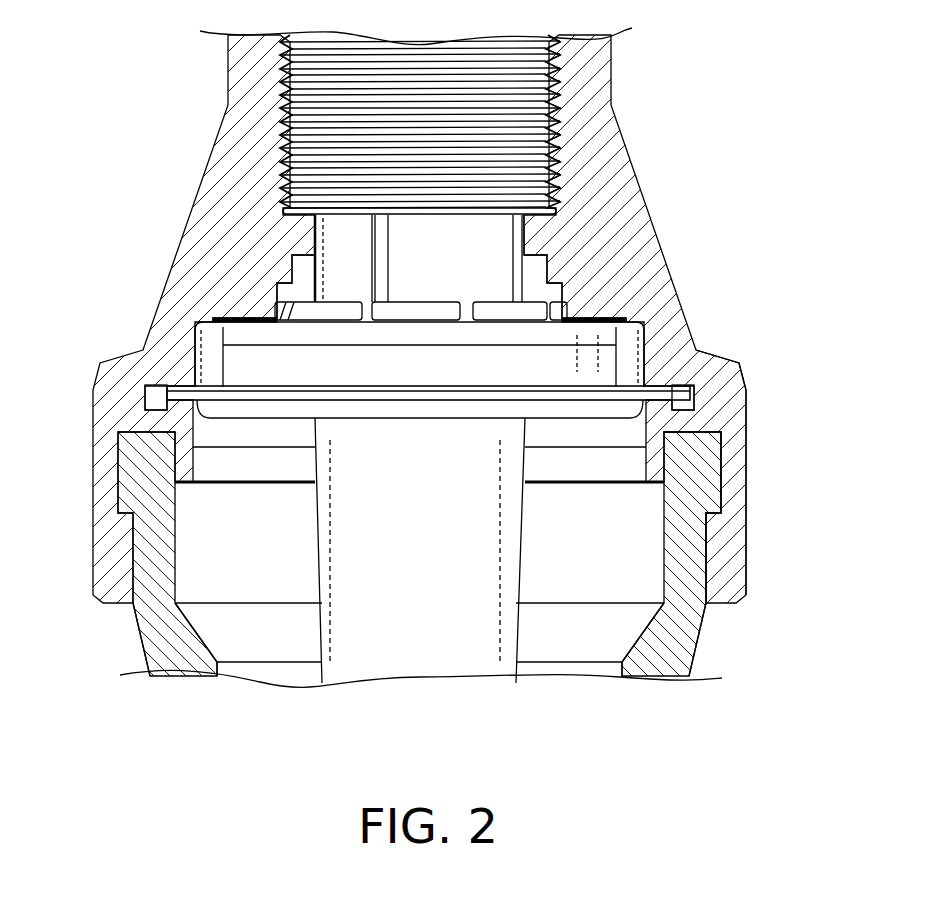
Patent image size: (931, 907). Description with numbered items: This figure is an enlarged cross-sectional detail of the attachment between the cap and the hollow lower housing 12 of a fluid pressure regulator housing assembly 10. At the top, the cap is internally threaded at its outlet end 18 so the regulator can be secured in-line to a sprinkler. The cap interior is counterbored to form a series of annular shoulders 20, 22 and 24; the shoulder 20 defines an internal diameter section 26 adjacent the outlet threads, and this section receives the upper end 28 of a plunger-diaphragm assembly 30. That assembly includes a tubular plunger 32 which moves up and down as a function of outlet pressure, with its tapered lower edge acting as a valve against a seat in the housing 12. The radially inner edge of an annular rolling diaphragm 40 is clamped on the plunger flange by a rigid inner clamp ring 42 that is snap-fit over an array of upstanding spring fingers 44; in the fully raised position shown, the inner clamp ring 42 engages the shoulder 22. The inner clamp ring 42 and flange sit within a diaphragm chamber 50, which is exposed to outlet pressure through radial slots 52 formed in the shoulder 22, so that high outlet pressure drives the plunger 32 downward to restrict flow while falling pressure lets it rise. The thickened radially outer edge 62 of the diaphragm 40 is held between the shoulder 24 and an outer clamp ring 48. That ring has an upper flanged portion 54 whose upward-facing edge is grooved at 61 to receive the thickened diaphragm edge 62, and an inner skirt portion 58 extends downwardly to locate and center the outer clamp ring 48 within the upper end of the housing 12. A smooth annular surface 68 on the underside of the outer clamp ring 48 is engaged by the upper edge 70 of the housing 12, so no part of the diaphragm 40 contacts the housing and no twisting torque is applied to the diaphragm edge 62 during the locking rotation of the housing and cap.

The fluid pressure regulator housing assembly 10 is at (690, 135).
The lower housing 12 is at (700, 650).
The outlet end 18 is at (597, 59).
The annular shoulder 20 is at (565, 218).
The annular shoulder 22 is at (600, 312).
The annular shoulder 24 is at (670, 342).
The internal diameter section 26 is at (532, 238).
The upper end 28 is at (337, 241).
The plunger-diaphragm assembly 30 is at (318, 624).
The tubular plunger 32 is at (502, 557).
The rolling diaphragm 40 is at (233, 372).
The inner clamp ring 42 is at (257, 337).
The spring fingers 44 is at (407, 312).
The outer clamp ring 48 is at (672, 460).
The diaphragm chamber 50 is at (203, 355).
The radial slots 52 is at (592, 310).
The upper flanged portion 54 is at (722, 442).
The inner skirt portion 58 is at (700, 493).
The groove 61 is at (700, 415).
The outer edge 62 is at (165, 378).
The smooth annular surface 68 is at (178, 486).
The upper edge 70 is at (132, 418).